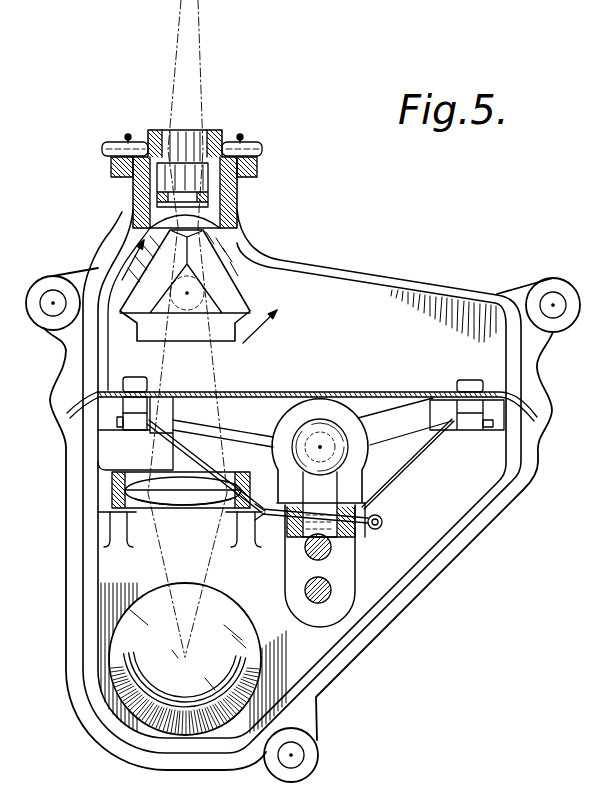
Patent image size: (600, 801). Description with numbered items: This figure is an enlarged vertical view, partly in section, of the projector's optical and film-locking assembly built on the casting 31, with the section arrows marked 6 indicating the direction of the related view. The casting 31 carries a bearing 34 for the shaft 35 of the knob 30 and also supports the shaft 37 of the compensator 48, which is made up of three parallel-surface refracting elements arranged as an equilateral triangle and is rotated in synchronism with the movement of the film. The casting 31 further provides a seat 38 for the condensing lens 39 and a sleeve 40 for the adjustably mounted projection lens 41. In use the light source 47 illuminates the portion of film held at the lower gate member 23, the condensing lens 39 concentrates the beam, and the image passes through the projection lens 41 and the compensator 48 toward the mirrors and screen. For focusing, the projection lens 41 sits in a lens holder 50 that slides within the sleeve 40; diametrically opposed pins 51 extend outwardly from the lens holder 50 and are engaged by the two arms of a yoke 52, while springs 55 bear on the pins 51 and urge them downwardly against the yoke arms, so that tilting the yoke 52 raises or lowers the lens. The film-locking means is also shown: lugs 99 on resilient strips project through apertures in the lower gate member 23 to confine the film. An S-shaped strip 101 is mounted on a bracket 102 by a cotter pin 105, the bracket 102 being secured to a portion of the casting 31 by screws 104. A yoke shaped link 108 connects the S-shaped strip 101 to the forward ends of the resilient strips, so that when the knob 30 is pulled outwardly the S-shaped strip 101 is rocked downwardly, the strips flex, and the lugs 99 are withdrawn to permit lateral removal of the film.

The section line of FIG. 6 is at (194, 304).
The lower gate member 23 is at (404, 391).
The knob 30 is at (305, 423).
The casting 31 is at (461, 552).
The bearing 34 is at (357, 427).
The shaft 35 is at (323, 440).
The shaft 37 is at (147, 388).
The seat 38 is at (255, 474).
The condensing lens 39 is at (197, 509).
The sleeve 40 is at (237, 193).
The projection lens 41 is at (201, 133).
The light source 47 is at (238, 644).
The compensator 48 is at (249, 311).
The lens holder 50 is at (206, 139).
The pins 51 is at (102, 150).
The yoke 52 is at (111, 168).
The springs 55 is at (128, 134).
The lug 99 is at (138, 375).
The S-shaped strip 101 is at (331, 494).
The bracket 102 is at (286, 571).
The screws 104 is at (326, 589).
The cotter pin 105 is at (383, 521).
The yoke shaped link 108 is at (404, 474).